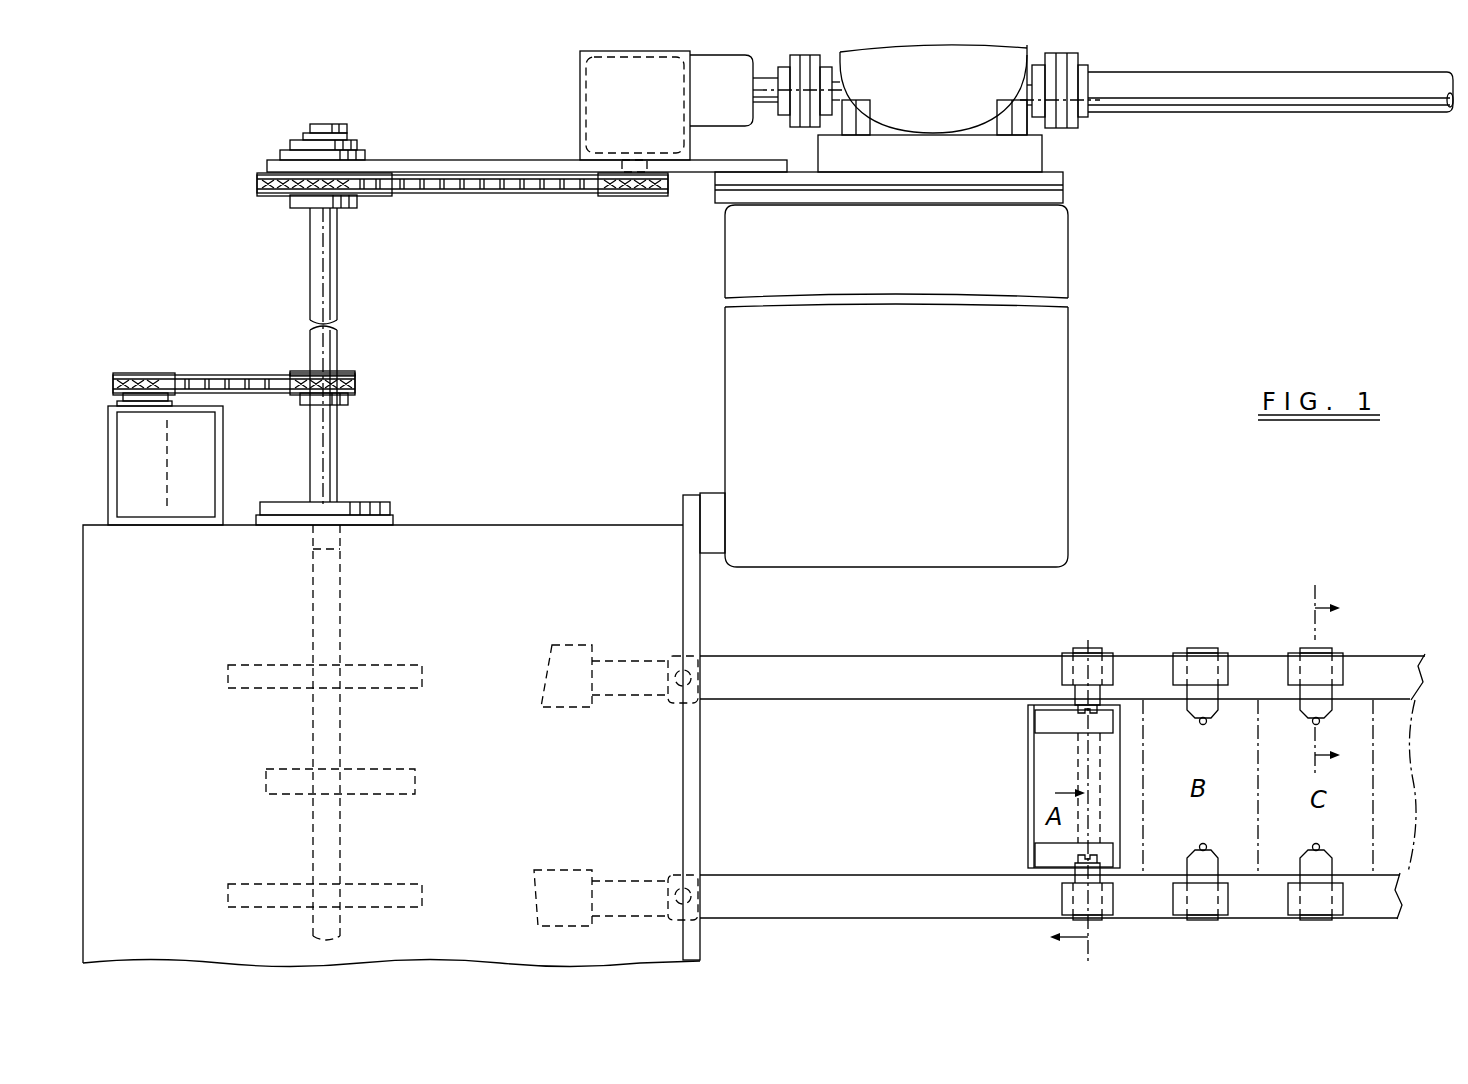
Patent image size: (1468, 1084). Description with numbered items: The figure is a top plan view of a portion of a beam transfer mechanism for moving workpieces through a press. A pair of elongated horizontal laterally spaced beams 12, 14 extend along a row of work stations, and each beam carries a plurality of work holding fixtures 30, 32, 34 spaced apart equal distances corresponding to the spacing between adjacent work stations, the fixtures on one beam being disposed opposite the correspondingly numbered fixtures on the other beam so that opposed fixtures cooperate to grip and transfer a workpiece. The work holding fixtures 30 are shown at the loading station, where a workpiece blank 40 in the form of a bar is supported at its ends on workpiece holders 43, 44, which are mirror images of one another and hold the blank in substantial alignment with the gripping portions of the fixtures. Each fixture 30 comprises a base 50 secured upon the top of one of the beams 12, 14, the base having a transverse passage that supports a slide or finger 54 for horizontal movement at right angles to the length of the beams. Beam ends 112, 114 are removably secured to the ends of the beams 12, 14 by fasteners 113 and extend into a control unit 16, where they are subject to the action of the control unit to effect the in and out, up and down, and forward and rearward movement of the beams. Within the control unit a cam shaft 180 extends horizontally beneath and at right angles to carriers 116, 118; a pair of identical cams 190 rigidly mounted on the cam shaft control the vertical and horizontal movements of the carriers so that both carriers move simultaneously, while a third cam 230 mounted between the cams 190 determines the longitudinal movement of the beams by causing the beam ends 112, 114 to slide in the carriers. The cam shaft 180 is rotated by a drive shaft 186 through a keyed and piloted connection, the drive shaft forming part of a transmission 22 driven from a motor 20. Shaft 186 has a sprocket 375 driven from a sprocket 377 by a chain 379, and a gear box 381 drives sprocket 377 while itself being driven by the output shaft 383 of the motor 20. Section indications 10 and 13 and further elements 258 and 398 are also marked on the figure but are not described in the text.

The section line 10- 10 is at (1064, 804).
The beam 12 is at (866, 657).
The section line 13- 13 is at (1339, 681).
The beam 14 is at (849, 877).
The control unit 16 is at (153, 706).
The motor 20 is at (952, 81).
The transmission 22 is at (244, 182).
The work holding fixture 30 is at (1107, 653).
The work holding fixture 32 is at (1221, 653).
The work holding fixture 34 is at (1299, 653).
The workpiece blank 40 is at (1082, 757).
The workpiece holder 43 is at (1045, 722).
The workpiece holder 44 is at (1045, 850).
The base 50 is at (1061, 670).
The slide or finger 54 is at (1086, 647).
The beam end 112 is at (620, 660).
The fastener 113 is at (667, 702).
The beam end 114 is at (640, 868).
The carrier 116 is at (557, 652).
The carrier 118 is at (570, 870).
The cam shaft 180 is at (342, 625).
The drive shaft 186 is at (335, 484).
The cam 190 is at (287, 690).
The third cam 230 is at (415, 790).
The spool hub 258 is at (842, 96).
The sprocket 375 is at (278, 197).
The sprocket 377 is at (623, 197).
The chain 379 is at (495, 195).
The gear box 381 is at (598, 125).
The output shaft 383 is at (770, 97).
The shaft 398 is at (1197, 108).